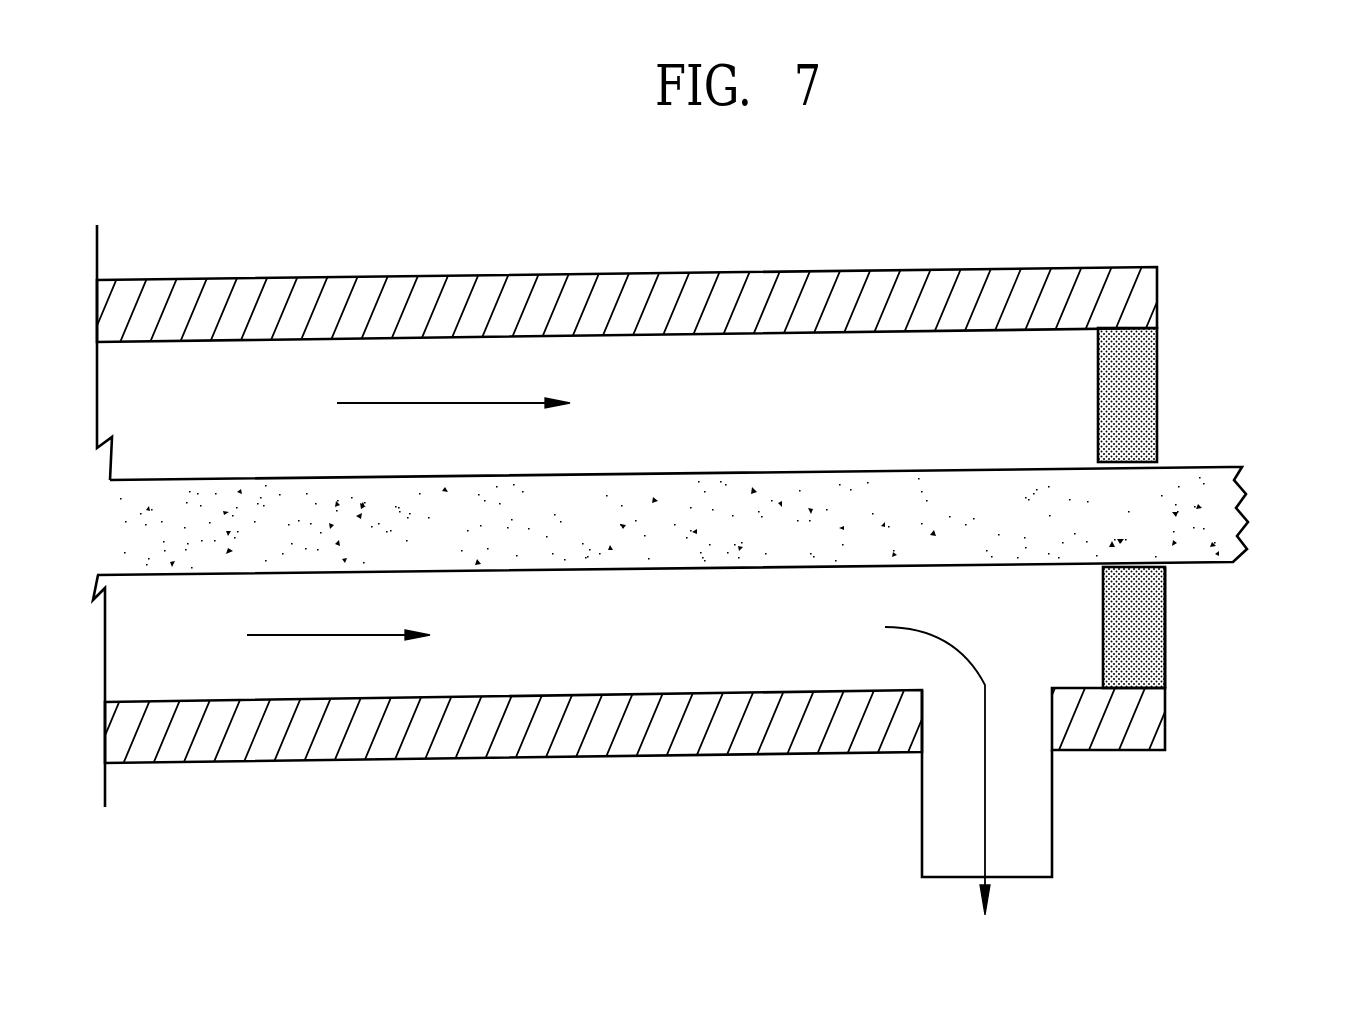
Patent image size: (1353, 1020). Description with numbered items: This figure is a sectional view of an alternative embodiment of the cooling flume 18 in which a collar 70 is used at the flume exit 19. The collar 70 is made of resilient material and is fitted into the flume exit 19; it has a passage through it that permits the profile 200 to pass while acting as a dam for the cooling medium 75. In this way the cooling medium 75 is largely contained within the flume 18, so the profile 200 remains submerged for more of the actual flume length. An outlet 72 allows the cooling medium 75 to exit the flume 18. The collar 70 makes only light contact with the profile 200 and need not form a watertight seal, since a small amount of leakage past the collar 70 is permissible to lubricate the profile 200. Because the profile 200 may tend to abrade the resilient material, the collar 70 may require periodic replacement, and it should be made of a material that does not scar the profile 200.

The flume 18 is at (535, 273).
The flume exit 19 is at (1202, 644).
The collar 70 is at (1160, 383).
The outlet 72 is at (1058, 790).
The cooling medium 75 is at (378, 403).
The profile 200 is at (1218, 465).